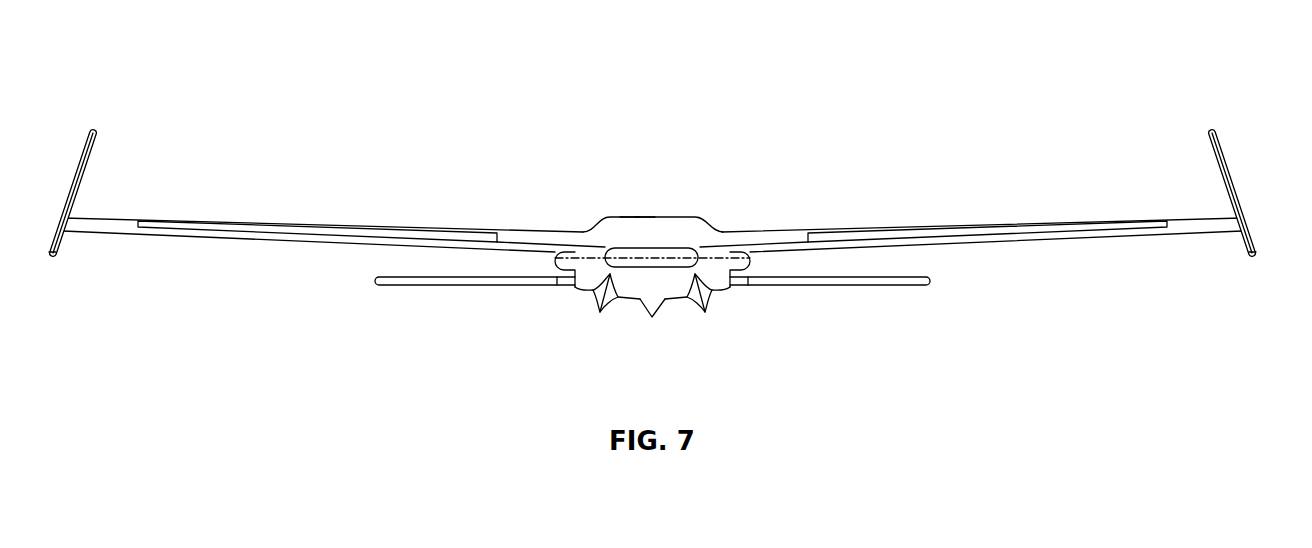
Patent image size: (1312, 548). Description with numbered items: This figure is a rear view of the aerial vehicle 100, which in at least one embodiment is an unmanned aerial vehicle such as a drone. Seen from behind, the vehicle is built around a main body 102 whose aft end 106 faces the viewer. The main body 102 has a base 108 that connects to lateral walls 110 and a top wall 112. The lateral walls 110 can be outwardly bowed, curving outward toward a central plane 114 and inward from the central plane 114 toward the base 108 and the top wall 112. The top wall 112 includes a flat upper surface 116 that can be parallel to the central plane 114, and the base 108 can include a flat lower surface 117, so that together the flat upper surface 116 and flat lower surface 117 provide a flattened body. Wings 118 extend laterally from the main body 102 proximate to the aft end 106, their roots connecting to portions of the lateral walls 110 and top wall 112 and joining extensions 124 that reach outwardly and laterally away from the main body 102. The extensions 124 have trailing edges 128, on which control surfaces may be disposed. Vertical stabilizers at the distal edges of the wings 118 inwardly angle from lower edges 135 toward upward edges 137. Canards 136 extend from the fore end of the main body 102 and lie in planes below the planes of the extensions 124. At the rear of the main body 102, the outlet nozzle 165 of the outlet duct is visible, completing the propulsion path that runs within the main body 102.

The aerial vehicle 100 is at (318, 85).
The main body 102 is at (643, 216).
The aft end 106 is at (688, 237).
The base 108 is at (628, 300).
The lateral walls 110 is at (570, 268).
The top wall 112 is at (616, 216).
The central plane 114 is at (720, 257).
The flat upper surface 116 is at (629, 216).
The flat lower surface 117 is at (677, 300).
The wings 118 is at (203, 219).
The extensions 124 is at (118, 217).
The trailing edges 128 is at (158, 240).
The lower edges 135 is at (51, 258).
The canards 136 is at (425, 286).
The upward edges 137 is at (96, 130).
The outlet nozzle 165 is at (606, 266).